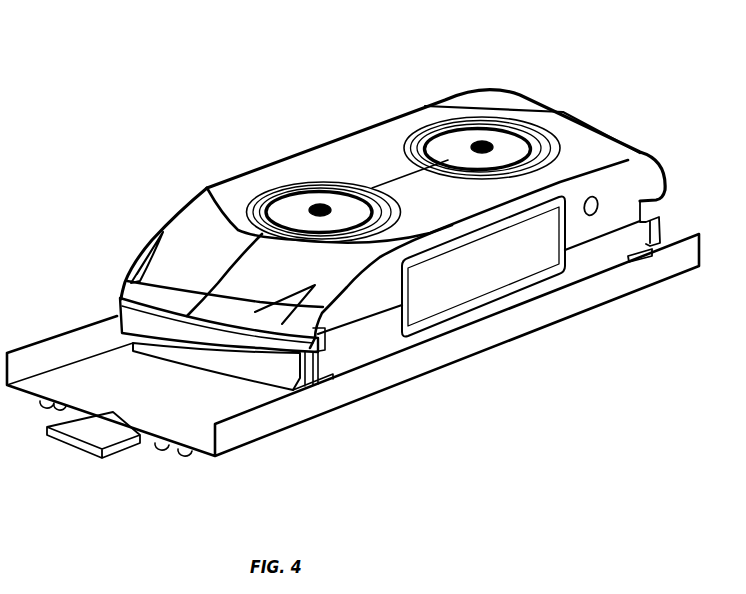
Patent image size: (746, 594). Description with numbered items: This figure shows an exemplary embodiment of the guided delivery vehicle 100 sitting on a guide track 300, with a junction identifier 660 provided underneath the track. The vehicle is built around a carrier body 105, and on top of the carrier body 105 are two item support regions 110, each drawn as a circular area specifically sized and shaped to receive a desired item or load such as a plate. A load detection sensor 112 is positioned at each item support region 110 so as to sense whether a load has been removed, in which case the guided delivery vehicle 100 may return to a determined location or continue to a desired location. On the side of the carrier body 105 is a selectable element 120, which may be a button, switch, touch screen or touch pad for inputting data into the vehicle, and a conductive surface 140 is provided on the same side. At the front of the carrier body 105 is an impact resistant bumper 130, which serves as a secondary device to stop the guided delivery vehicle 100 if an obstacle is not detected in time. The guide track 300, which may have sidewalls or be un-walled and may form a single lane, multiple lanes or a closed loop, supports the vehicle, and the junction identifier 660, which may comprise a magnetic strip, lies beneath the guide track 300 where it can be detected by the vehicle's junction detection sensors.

The guided delivery vehicle 100 is at (178, 130).
The carrier body 105 is at (193, 230).
The item support region 110 is at (320, 197).
The load detection sensor 112 is at (304, 200).
The selectable element 120 is at (597, 200).
The bumper 130 is at (114, 306).
The conductive surface 140 is at (497, 273).
The guide track 300 is at (247, 433).
The junction identifier 660 is at (113, 447).